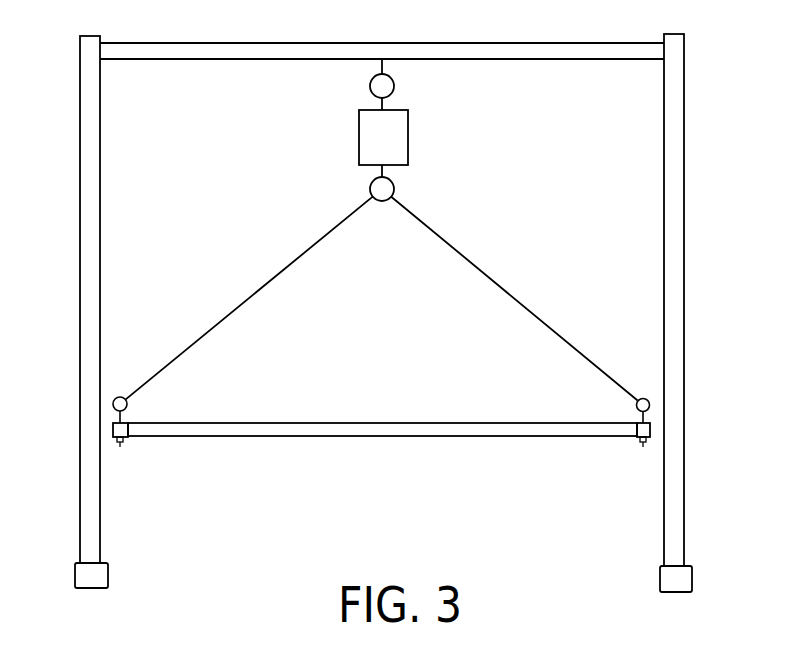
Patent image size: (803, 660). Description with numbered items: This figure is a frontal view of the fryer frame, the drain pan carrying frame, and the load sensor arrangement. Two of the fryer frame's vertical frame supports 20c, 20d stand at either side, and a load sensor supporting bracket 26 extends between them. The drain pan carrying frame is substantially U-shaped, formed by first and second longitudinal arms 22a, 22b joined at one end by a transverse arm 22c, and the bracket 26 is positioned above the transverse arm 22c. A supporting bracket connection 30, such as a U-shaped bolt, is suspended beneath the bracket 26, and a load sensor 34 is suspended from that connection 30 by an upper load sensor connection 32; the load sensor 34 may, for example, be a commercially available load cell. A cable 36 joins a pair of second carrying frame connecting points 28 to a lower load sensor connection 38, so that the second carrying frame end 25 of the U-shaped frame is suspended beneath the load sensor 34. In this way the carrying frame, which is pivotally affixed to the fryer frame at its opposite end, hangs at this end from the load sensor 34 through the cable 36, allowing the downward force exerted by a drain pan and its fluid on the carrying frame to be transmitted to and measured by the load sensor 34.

The vertical frame support 20c is at (684, 278).
The vertical frame support 20d is at (80, 233).
The first longitudinal arm 22a is at (648, 440).
The second longitudinal arm 22b is at (116, 440).
The transverse arm 22c is at (238, 423).
The second carrying frame end 25 is at (381, 439).
The load sensor supporting bracket 26 is at (462, 43).
The second carrying frame connecting points 28 is at (636, 403).
The supporting bracket connection 30 is at (380, 64).
The upper ring 32 is at (394, 84).
The load sensor 34 is at (408, 135).
The cable 36 is at (482, 270).
The lower load sensor connection 38 is at (394, 185).